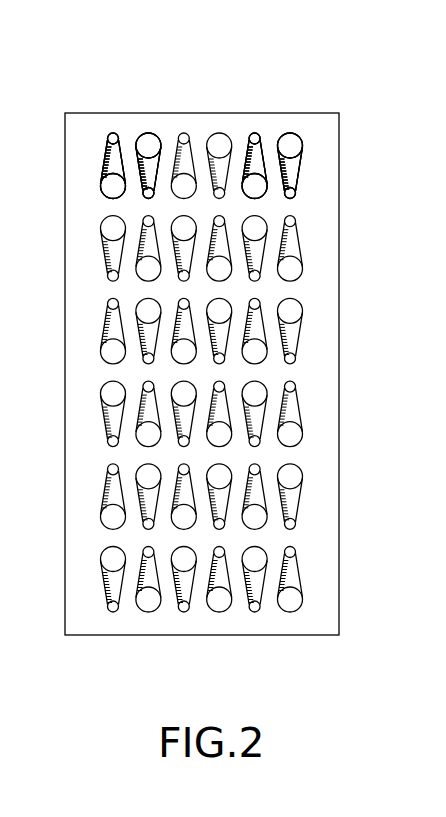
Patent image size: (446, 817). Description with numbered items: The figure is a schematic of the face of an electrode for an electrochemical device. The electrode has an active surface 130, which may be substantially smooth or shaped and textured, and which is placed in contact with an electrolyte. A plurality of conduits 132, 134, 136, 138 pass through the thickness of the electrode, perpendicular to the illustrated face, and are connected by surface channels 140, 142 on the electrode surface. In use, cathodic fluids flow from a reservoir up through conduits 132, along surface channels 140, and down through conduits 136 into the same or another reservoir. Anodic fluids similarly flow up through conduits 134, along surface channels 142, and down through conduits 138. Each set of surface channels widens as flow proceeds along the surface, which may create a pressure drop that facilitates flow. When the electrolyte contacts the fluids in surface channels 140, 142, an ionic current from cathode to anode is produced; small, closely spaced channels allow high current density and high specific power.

The active surface 130 is at (330, 192).
The conduits 132 is at (112, 136).
The conduits 134 is at (147, 197).
The conduits 136 is at (108, 186).
The conduits 138 is at (147, 137).
The surface channels 140 is at (109, 150).
The surface channels 142 is at (150, 165).